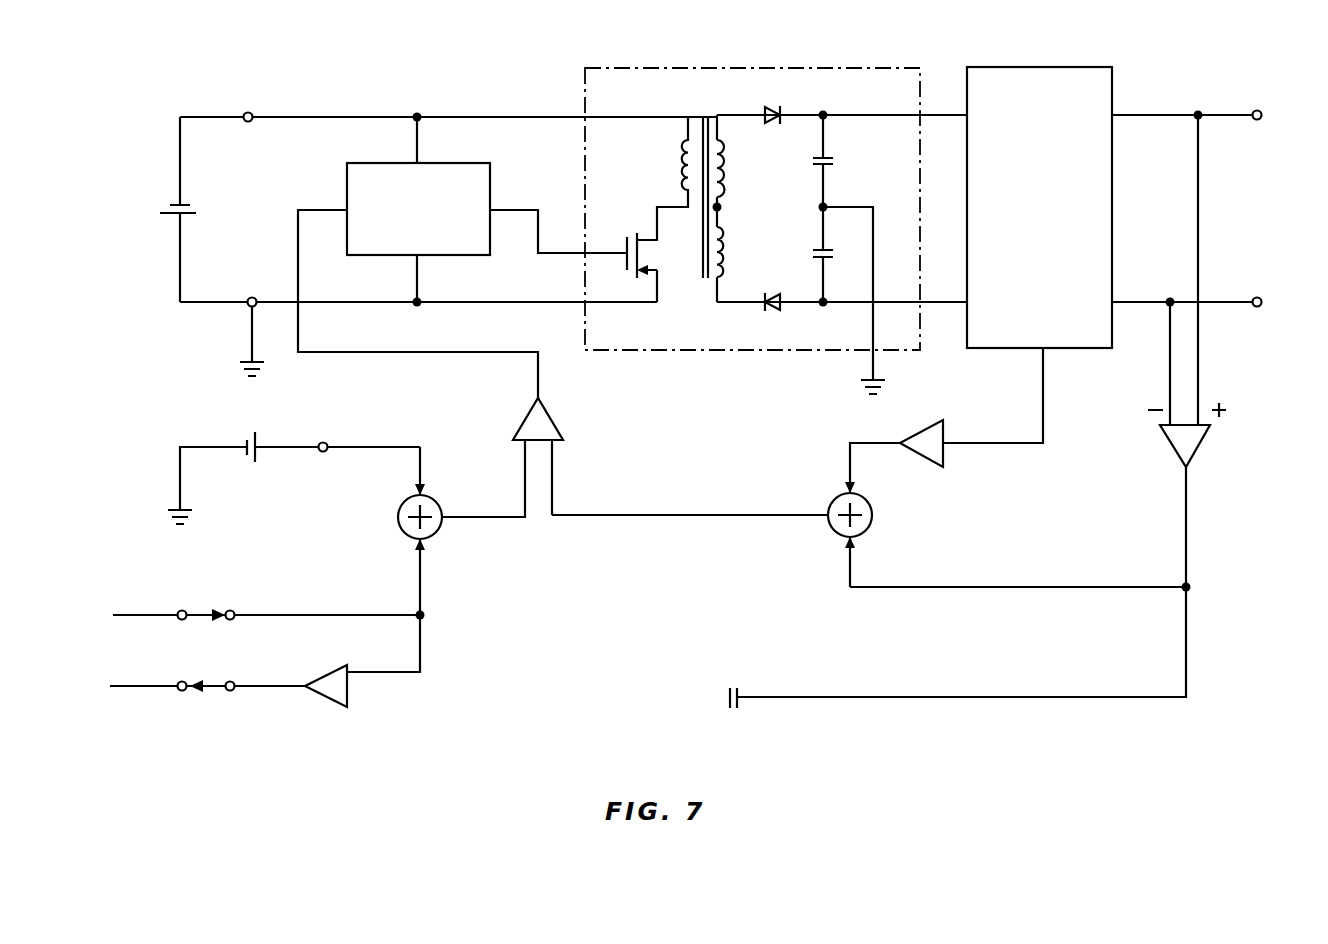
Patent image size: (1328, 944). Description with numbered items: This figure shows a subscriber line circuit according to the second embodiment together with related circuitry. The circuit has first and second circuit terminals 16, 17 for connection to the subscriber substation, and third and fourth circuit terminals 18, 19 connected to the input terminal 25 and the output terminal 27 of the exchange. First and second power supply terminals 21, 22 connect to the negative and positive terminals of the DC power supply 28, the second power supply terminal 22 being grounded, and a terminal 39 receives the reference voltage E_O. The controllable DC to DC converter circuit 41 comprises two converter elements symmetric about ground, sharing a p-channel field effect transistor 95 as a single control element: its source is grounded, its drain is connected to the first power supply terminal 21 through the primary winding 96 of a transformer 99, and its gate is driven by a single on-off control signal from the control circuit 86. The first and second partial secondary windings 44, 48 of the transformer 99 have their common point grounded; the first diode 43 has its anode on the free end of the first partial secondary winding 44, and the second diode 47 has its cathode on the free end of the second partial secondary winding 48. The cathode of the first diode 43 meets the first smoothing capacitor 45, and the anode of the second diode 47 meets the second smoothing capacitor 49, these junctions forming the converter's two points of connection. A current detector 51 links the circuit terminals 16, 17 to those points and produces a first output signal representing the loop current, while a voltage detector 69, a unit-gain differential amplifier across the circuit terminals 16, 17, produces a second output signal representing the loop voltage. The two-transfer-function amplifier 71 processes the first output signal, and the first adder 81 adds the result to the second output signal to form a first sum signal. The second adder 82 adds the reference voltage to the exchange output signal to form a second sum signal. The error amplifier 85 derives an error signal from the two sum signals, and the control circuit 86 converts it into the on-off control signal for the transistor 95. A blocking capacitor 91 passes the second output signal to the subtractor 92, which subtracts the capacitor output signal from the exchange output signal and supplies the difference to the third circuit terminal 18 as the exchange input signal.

The first circuit terminal 16 is at (1261, 111).
The second circuit terminal 17 is at (1261, 298).
The third circuit terminal 18 is at (233, 692).
The fourth circuit terminal 19 is at (234, 611).
The first power supply terminal 21 is at (253, 111).
The second power supply terminal 22 is at (248, 298).
The input terminal of exchange 25 is at (178, 692).
The output terminal of exchange 27 is at (180, 602).
The DC power supply 28 is at (160, 211).
The reference voltage terminal 39 is at (327, 443).
The DC to DC converter circuit 41 is at (633, 352).
The first diode 43 is at (773, 107).
The first partial secondary winding 44 is at (722, 170).
The first smoothing capacitor 45 is at (833, 162).
The second diode 47 is at (783, 310).
The second partial secondary winding 48 is at (722, 262).
The second smoothing capacitor 49 is at (818, 248).
The current detector 51 is at (1043, 67).
The voltage detector 69 is at (1205, 440).
The two-transfer-function amplifier 71 is at (945, 455).
The first adder 81 is at (828, 530).
The second adder 82 is at (440, 528).
The error amplifier 85 is at (562, 442).
The control circuit 86 is at (455, 163).
The blocking capacitor 91 is at (738, 690).
The subtractor 92 is at (335, 705).
The p-channel field effect transistor 95 is at (645, 240).
The primary winding 96 is at (686, 163).
The transformer 99 is at (698, 106).